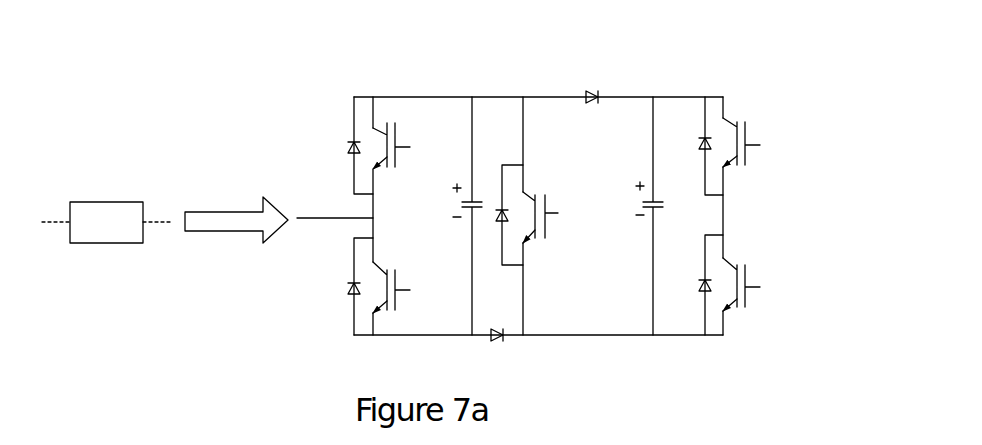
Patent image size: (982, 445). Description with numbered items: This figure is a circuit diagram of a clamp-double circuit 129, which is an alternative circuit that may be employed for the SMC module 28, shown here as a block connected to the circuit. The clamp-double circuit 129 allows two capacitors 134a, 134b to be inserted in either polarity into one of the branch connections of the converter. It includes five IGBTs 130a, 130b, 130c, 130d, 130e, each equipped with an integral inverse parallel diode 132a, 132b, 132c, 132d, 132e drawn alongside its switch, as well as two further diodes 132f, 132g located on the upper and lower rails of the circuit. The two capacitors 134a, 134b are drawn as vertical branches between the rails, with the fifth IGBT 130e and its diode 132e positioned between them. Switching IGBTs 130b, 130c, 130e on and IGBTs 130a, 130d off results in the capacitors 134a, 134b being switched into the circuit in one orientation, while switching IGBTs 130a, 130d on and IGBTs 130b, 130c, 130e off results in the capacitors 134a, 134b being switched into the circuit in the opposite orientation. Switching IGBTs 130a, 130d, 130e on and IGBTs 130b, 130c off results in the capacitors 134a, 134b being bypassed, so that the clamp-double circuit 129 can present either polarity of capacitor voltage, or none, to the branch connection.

The SMC module 28 is at (108, 201).
The clamp-double circuit 129 is at (340, 92).
The IGBT 130a is at (388, 122).
The IGBT 130b is at (388, 313).
The IGBT 130c is at (737, 122).
The IGBT 130d is at (738, 307).
The IGBT 130e is at (526, 198).
The integral inverse parallel diode 132a is at (348, 148).
The integral inverse parallel diode 132b is at (348, 289).
The integral inverse parallel diode 132c is at (702, 142).
The integral inverse parallel diode 132d is at (705, 293).
The integral inverse parallel diode 132e is at (501, 212).
The further diode 132f is at (589, 90).
The further diode 132g is at (496, 340).
The capacitor 134a is at (472, 200).
The capacitor 134b is at (659, 201).